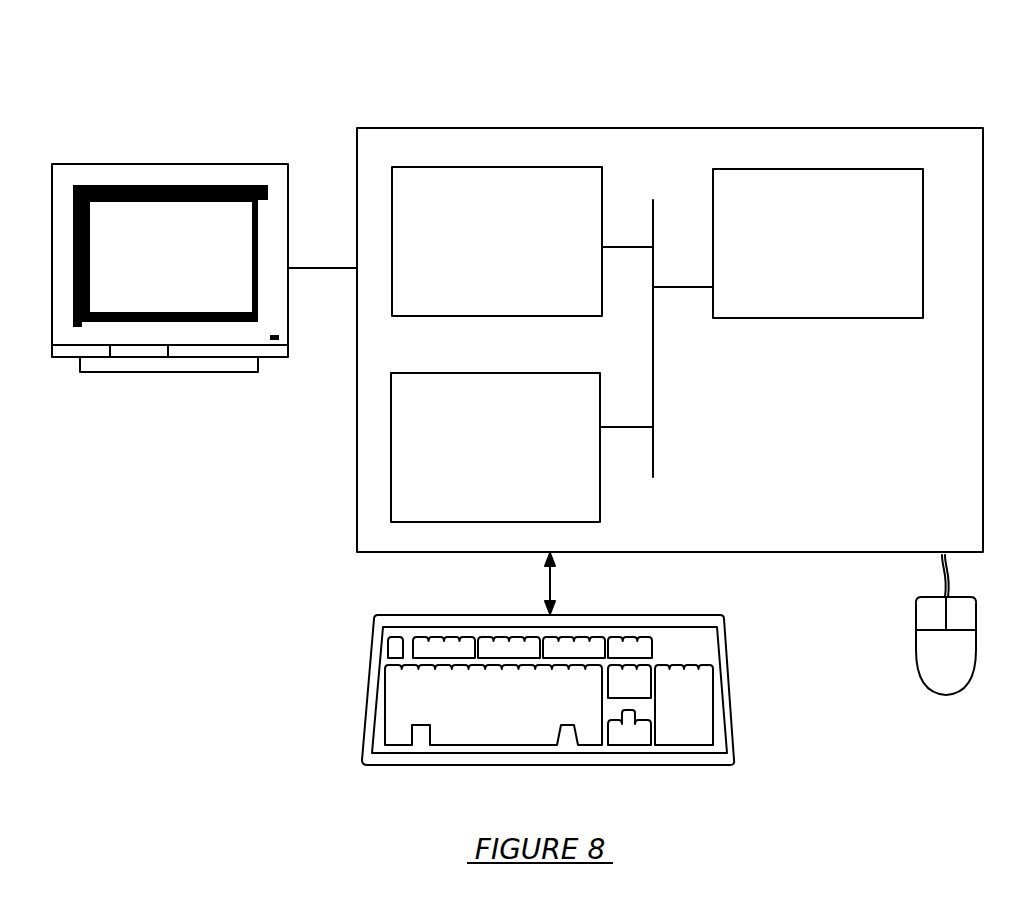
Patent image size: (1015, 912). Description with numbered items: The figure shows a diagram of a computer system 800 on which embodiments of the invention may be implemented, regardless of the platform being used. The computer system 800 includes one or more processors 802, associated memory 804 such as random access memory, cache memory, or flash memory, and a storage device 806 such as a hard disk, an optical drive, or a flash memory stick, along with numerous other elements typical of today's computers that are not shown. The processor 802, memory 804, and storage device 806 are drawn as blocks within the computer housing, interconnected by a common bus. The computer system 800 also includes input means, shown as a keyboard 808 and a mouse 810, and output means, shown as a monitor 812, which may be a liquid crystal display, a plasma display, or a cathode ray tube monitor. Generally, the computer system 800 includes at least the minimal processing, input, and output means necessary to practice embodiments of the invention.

The computer system 800 is at (648, 77).
The processor 802 is at (814, 255).
The memory 804 is at (478, 254).
The storage device 806 is at (473, 460).
The keyboard 808 is at (466, 729).
The mouse 810 is at (927, 669).
The monitor 812 is at (149, 272).